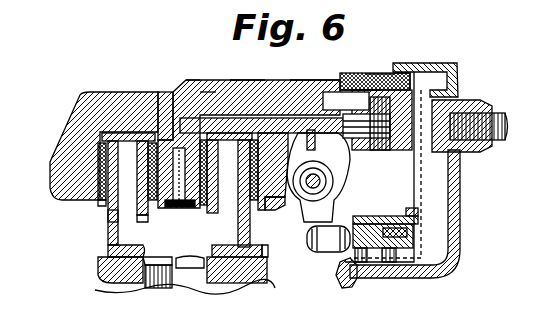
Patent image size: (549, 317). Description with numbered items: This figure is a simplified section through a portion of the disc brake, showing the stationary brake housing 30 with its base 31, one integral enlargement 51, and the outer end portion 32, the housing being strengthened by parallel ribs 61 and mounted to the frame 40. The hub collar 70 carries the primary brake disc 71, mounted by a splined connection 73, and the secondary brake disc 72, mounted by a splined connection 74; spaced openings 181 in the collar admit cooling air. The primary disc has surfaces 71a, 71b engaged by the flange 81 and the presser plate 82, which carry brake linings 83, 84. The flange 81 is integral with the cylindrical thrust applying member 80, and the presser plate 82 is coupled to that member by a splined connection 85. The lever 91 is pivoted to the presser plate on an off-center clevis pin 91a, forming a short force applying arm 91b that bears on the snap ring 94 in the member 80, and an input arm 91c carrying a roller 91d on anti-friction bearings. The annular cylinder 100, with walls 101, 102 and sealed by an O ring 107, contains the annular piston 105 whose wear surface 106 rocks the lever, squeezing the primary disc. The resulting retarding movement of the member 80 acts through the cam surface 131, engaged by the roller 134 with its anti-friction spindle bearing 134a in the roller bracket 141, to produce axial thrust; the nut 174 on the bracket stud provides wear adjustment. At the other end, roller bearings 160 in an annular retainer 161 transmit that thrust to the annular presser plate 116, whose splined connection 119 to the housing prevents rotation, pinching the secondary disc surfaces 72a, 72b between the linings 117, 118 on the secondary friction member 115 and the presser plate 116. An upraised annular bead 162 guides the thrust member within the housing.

The outer end portion 32 is at (72, 128).
The parallel ribs 61 is at (132, 90).
The roller bearings 160 is at (165, 136).
The annular retainer 161 is at (208, 105).
The splined connection 119 is at (203, 157).
The upraised annular bead 162 is at (277, 140).
The splined connection 85 is at (273, 117).
The thrust applying member 80 is at (293, 117).
The flange 81 is at (190, 208).
The secondary brake disc 72 is at (108, 233).
The braking surface 72a is at (108, 220).
The braking surface 72b is at (110, 240).
The brake lining 117 is at (97, 164).
The brake lining 118 is at (139, 175).
The secondary friction member 115 is at (99, 204).
The annular presser plate 116 is at (157, 212).
The brake lining 83 is at (215, 172).
The brake lining 84 is at (246, 186).
The presser plate 82 is at (265, 207).
The input arm 91c is at (309, 209).
The collar 70 is at (112, 287).
The spaced openings 181 is at (174, 280).
The primary brake disc 71 is at (235, 283).
The disc surface 71a is at (210, 214).
The disc surface 71b is at (262, 246).
The splined connection 73 is at (205, 268).
The splined connection 74 is at (148, 258).
The lever 91 is at (342, 200).
The clevis pin 91a is at (326, 182).
The short force applying arm 91b is at (319, 139).
The roller 91d is at (310, 248).
The cam surface 131 is at (367, 120).
The roller 134 is at (336, 145).
The anti-friction spindle bearing 134a is at (374, 72).
The stationary brake housing 30 is at (331, 77).
The snap ring 94 is at (349, 85).
The integral enlargement 51 is at (365, 71).
The base 31 is at (414, 64).
The roller bracket 141 is at (413, 152).
The nut 174 is at (478, 99).
The frame 40 is at (464, 221).
The annular piston 105 is at (345, 275).
The wear surface 106 is at (357, 216).
The O ring 107 is at (400, 236).
The cylinder wall 101 is at (418, 217).
The annular cylinder 100 is at (378, 262).
The cylinder wall 102 is at (400, 262).